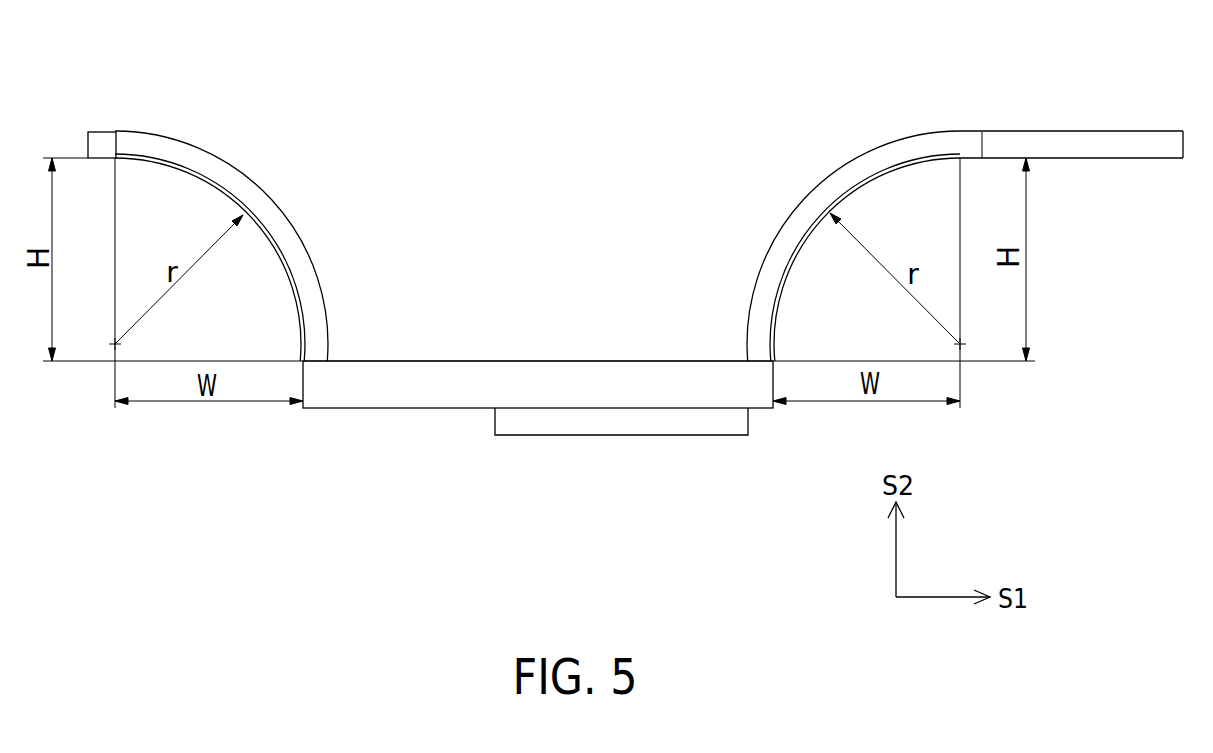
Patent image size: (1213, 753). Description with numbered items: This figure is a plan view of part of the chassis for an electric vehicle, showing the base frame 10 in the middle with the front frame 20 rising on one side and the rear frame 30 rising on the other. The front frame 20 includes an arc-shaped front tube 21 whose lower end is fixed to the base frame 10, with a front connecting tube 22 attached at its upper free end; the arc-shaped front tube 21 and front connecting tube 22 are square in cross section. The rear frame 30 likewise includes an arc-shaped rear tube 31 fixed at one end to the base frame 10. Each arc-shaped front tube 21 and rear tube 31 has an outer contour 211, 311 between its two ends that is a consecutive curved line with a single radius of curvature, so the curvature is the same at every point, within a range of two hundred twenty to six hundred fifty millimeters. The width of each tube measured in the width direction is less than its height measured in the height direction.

The base frame 10 is at (380, 410).
The front frame 20 is at (198, 193).
The arc-shaped front tube 21 is at (203, 163).
The front connecting tube 22 is at (102, 138).
The outer contour 211 is at (280, 262).
The rear frame 30 is at (965, 193).
The arc-shaped rear tube 31 is at (873, 163).
The outer contour 311 is at (795, 262).